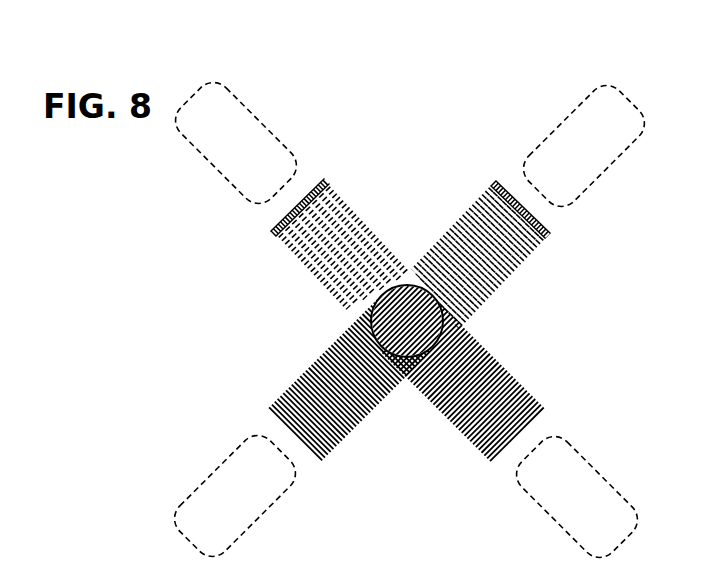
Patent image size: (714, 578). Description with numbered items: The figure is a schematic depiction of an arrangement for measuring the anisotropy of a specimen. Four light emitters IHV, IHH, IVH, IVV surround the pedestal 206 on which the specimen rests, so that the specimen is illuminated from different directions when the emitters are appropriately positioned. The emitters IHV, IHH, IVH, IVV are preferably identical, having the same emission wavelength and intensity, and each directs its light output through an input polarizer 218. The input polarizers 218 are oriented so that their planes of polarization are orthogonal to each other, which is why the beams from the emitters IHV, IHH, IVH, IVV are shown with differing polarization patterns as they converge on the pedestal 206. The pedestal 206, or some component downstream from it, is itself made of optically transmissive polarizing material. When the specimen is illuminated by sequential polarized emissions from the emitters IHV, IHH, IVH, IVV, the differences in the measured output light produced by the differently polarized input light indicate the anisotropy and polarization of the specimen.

The pedestal 206 is at (372, 321).
The input polarizer 218 is at (272, 233).
The light emitter I_HV IHV is at (236, 143).
The light emitter I_HH IHH is at (584, 146).
The light emitter I_VH IVH is at (235, 496).
The light emitter I_VV IVV is at (577, 497).